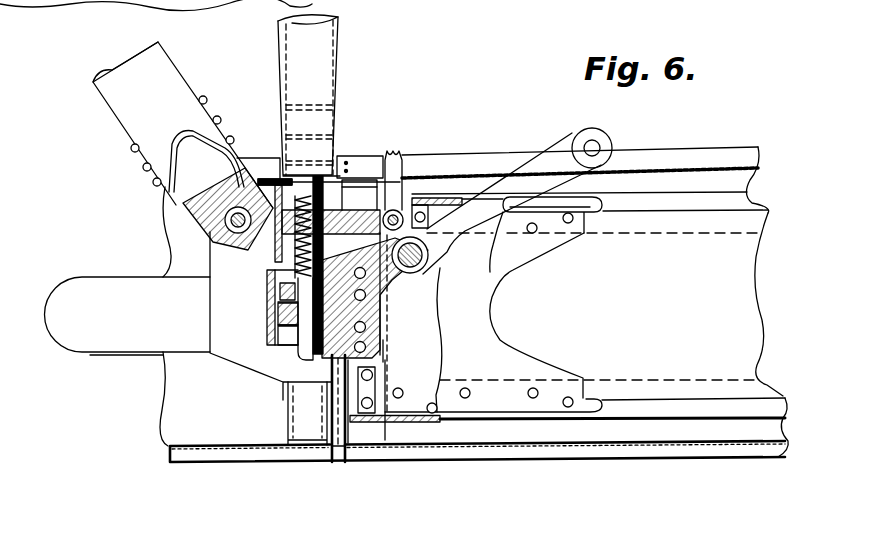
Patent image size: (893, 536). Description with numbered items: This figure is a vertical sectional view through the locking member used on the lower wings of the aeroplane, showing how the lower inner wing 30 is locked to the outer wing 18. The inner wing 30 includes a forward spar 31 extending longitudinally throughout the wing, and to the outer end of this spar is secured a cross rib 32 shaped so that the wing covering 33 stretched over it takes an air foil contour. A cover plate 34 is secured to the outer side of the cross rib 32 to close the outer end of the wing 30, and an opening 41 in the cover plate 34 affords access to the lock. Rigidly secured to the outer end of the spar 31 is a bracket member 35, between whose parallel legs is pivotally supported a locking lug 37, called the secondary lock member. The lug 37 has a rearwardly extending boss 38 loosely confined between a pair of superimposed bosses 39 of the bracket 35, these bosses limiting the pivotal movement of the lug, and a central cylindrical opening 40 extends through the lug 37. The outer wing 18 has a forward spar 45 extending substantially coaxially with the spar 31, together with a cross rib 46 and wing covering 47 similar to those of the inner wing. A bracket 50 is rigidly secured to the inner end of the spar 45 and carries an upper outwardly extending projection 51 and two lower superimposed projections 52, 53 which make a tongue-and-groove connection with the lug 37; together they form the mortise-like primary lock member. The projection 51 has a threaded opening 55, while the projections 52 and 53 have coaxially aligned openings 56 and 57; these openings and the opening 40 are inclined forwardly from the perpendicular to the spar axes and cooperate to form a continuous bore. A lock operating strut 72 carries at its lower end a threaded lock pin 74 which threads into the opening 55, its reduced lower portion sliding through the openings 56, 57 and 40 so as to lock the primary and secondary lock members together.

The outer wing 18 is at (690, 460).
The right-hand wing 30 is at (190, 0).
The forward spar 31 is at (118, 290).
The cross rib 32 is at (314, 463).
The wing covering 33 is at (267, 180).
The cover plate 34 is at (343, 450).
The bracket member 35 is at (267, 337).
The locking lug (secondary lock member) 37 is at (270, 306).
The boss 38 is at (272, 317).
The bosses 39 is at (272, 292).
The central cylindrical opening 40 is at (383, 332).
The opening 41 is at (327, 382).
The forward spar 45 is at (740, 293).
The cross rib 46 is at (394, 178).
The wing covering 47 is at (500, 448).
The bracket 50 is at (382, 309).
The upper outwardly extending projection 51 is at (365, 177).
The lower outwardly extending projection 52 is at (270, 276).
The lower outwardly extending projection 53 is at (283, 342).
The threaded opening 55 is at (345, 252).
The opening 56 is at (422, 273).
The opening 57 is at (381, 358).
The lock operating strut 72 is at (328, 62).
The threaded lock pin 74 is at (317, 177).